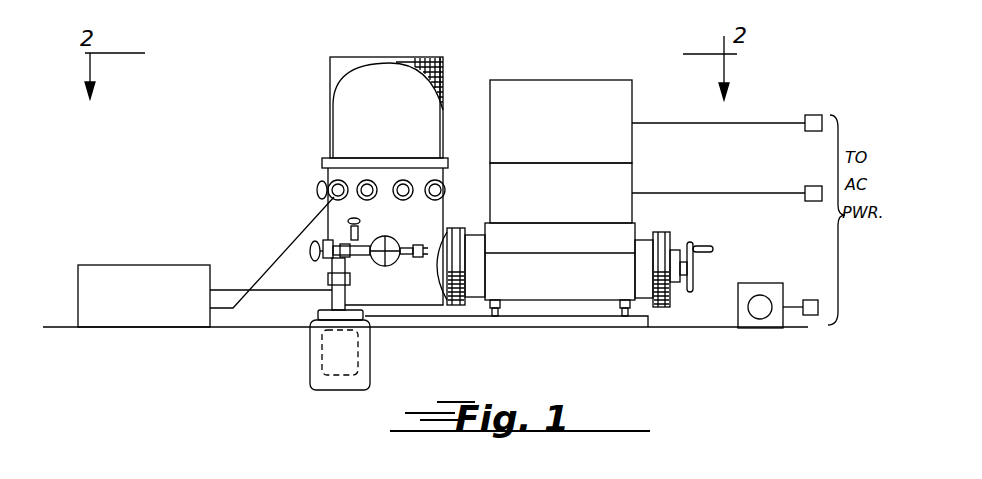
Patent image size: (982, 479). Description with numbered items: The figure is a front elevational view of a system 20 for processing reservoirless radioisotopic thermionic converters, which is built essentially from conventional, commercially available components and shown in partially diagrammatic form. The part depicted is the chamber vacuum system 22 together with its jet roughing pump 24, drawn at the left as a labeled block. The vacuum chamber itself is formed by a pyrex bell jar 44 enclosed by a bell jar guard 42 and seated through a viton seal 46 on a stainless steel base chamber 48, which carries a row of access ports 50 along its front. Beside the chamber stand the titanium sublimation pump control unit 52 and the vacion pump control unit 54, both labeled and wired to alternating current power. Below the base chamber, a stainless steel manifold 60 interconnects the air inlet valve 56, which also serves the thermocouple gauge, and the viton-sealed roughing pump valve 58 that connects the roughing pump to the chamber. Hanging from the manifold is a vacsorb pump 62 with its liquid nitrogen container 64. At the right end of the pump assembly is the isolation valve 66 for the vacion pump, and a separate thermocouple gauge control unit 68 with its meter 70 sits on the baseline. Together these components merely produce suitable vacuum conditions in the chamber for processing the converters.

The system 20 is at (768, 71).
The chamber vacuum system 22 is at (536, 300).
The jet roughing pump 24 is at (78, 283).
The bell jar guard 42 is at (440, 60).
The pyrex bell jar 44 is at (334, 73).
The viton seal 46 is at (322, 160).
The stainless steel base chamber 48 is at (446, 200).
The access ports 50 is at (317, 190).
The titanium sublimation pump control unit 52 is at (632, 106).
The vacion pump control unit 54 is at (632, 184).
The air inlet valve 56 is at (350, 218).
The viton-sealed roughing pump valve 58 is at (310, 251).
The stainless steel manifold 60 is at (378, 263).
The vacsorb pump 62 is at (310, 341).
The liquid nitrogen container 64 is at (310, 370).
The isolation valve 66 is at (713, 248).
The thermocouple gauge control unit 68 is at (738, 311).
The meter 70 is at (762, 293).